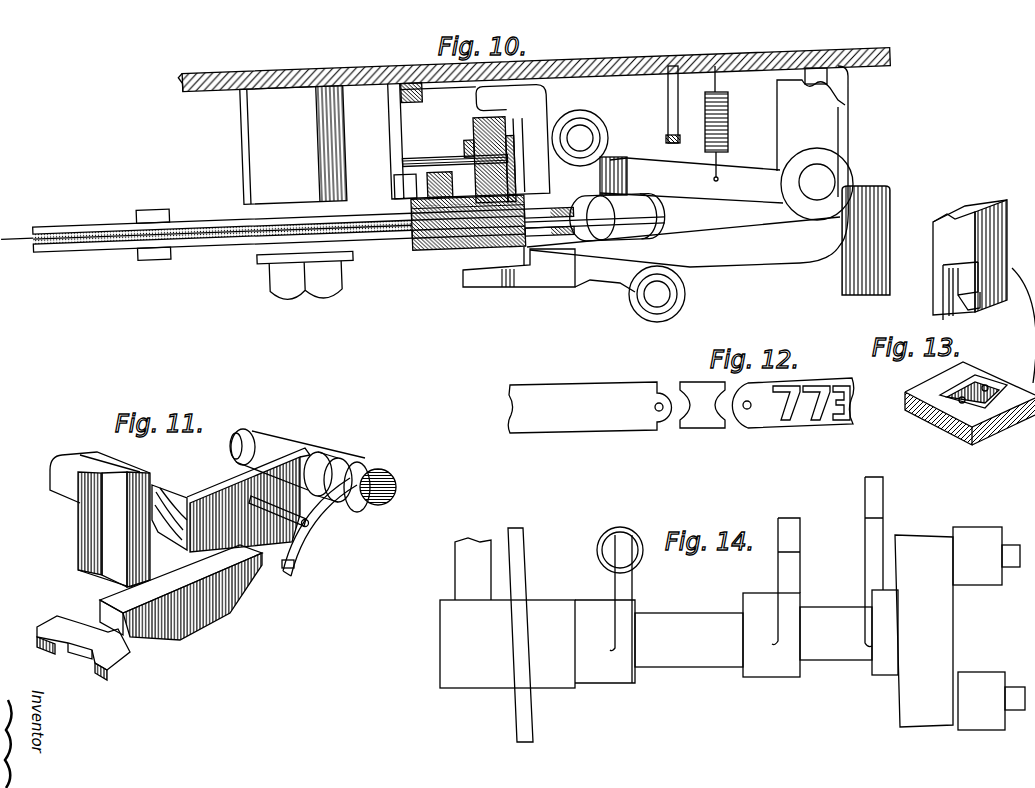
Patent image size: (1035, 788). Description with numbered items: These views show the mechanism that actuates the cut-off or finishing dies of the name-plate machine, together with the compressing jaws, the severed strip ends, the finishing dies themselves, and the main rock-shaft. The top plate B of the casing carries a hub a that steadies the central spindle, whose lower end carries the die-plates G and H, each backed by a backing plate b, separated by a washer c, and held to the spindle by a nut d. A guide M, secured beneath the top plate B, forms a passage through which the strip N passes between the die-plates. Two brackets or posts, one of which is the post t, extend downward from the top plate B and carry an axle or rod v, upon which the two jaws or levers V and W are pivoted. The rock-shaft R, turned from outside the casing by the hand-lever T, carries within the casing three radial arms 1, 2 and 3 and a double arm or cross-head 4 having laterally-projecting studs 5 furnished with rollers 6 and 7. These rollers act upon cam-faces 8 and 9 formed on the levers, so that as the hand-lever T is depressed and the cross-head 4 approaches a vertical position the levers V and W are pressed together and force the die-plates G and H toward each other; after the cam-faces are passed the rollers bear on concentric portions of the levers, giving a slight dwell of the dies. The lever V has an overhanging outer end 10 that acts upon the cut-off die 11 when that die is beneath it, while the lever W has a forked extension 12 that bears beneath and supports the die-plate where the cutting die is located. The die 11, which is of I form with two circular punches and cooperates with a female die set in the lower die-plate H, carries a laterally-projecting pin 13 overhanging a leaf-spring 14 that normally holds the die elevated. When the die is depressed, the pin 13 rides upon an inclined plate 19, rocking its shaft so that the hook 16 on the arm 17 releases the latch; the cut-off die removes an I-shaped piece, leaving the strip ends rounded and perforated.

In FIG. 14, the radial arm 1 is at (620, 605).
In FIG. 14, the radial arm 2 is at (777, 597).
In FIG. 14, the radial arm 3 is at (884, 530).
In FIG. 10, the cross-head 4 is at (618, 158).
In FIG. 14, the cross-head 4 is at (924, 631).
In FIG. 10, the studs 5 is at (618, 216).
In FIG. 14, the studs 5 is at (1011, 544).
In FIG. 10, the roller 6 is at (600, 124).
In FIG. 14, the roller 6 is at (977, 556).
In FIG. 10, the roller 7 is at (686, 295).
In FIG. 14, the roller 7 is at (981, 701).
In FIG. 10, the cam-face 8 is at (620, 176).
In FIG. 11, the cam-face 8 is at (162, 495).
In FIG. 10, the cam-face 9 is at (631, 283).
In FIG. 11, the cam-face 9 is at (190, 603).
In FIG. 10, the overhanging outer end 10 is at (469, 138).
In FIG. 11, the overhanging outer end 10 is at (100, 519).
In FIG. 10, the cut-off die 11 is at (479, 119).
In FIG. 13, the cut-off die 11 is at (970, 260).
In FIG. 10, the extension 12 is at (463, 276).
In FIG. 11, the extension 12 is at (88, 661).
In FIG. 10, the pin 13 is at (446, 155).
In FIG. 10, the leaf-spring 14 is at (440, 185).
In FIG. 10, the hook 16 is at (680, 132).
In FIG. 10, the arm 17 is at (668, 99).
In FIG. 10, the inclined bearing plate 19 is at (395, 184).
In FIG. 10, the top plate B is at (533, 56).
In FIG. 10, the hub a is at (293, 145).
In FIG. 10, the backing plate b is at (204, 259).
In FIG. 10, the washer c is at (254, 229).
In FIG. 10, the nut d is at (342, 272).
In FIG. 10, the die-plate G is at (87, 215).
In FIG. 10, the lower die-plate H is at (73, 237).
In FIG. 13, the lower die-plate H is at (970, 410).
In FIG. 10, the guide M is at (120, 231).
In FIG. 10, the rock-shaft R is at (617, 217).
In FIG. 14, the rock-shaft R is at (689, 640).
In FIG. 10, the strip N is at (667, 212).
In FIG. 12, the strip N is at (589, 421).
In FIG. 10, the lever V is at (691, 180).
In FIG. 10, the lever W is at (682, 252).
In FIG. 11, the lever W is at (319, 527).
In FIG. 10, the bracket t is at (833, 180).
In FIG. 10, the axle v is at (817, 184).
In FIG. 11, the axle v is at (230, 438).
In FIG. 14, the hand-lever T is at (473, 569).